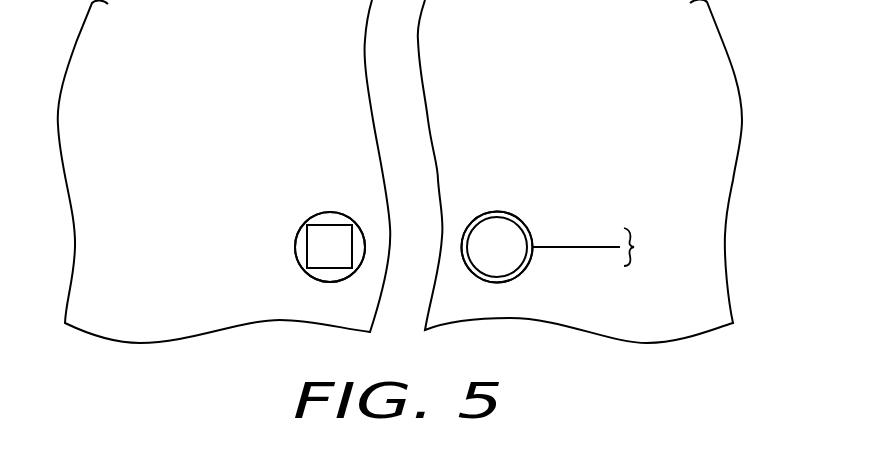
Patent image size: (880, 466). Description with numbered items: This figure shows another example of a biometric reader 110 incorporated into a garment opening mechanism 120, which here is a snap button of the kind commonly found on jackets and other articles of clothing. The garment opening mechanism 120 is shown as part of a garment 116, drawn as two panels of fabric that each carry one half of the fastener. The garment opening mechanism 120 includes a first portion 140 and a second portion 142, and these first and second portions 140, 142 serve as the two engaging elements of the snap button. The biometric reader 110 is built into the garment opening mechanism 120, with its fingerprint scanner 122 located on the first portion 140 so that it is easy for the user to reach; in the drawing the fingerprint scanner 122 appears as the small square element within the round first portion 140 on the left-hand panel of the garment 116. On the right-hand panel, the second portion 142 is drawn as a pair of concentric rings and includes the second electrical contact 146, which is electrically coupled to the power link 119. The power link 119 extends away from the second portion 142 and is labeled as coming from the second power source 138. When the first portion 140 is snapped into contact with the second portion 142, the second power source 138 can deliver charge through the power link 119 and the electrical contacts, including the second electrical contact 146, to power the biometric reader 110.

The biometric reader 110 is at (290, 217).
The garment 116 is at (292, 66).
The power link 119 is at (582, 244).
The garment opening mechanism 120 is at (288, 272).
The fingerprint scanner 122 is at (327, 258).
The second power source 138 is at (721, 249).
The first portion 140 is at (337, 214).
The second portion 142 is at (507, 228).
The second electrical contact 146 is at (485, 213).